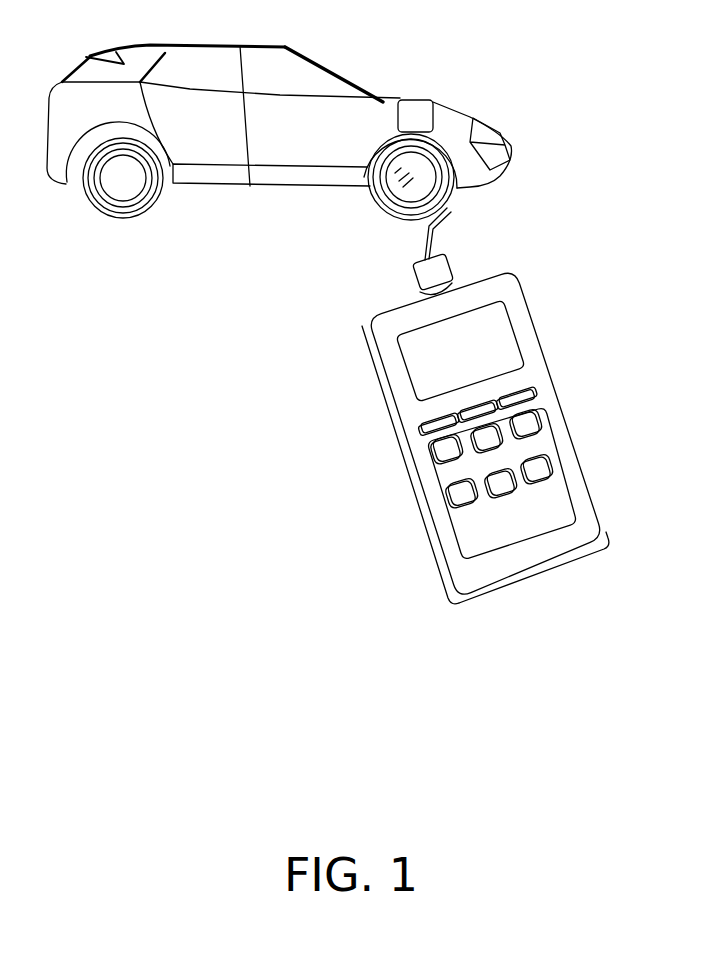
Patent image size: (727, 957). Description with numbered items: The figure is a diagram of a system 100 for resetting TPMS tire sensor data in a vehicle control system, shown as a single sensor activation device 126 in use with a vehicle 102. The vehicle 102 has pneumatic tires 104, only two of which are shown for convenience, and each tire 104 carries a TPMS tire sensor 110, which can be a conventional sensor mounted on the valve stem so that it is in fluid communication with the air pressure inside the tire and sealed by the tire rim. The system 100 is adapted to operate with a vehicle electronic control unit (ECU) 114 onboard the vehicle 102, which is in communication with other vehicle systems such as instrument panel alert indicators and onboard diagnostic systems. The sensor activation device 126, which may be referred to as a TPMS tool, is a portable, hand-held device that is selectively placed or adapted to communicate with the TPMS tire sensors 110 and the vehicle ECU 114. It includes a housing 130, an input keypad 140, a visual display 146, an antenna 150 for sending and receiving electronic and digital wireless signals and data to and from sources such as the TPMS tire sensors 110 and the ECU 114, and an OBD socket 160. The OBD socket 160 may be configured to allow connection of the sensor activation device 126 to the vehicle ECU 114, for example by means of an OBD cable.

The system 100 is at (283, 114).
The vehicle 102 is at (235, 46).
The pneumatic tire 104 is at (446, 195).
The TPMS tire sensor 110 is at (412, 240).
The vehicle electronic control unit (ECU) 114 is at (411, 99).
The sensor activation device 126 is at (469, 457).
The housing 130 is at (413, 490).
The input keypad 140 is at (556, 419).
The visual display 146 is at (413, 366).
The antenna 150 is at (454, 255).
The OBD socket 160 is at (546, 584).